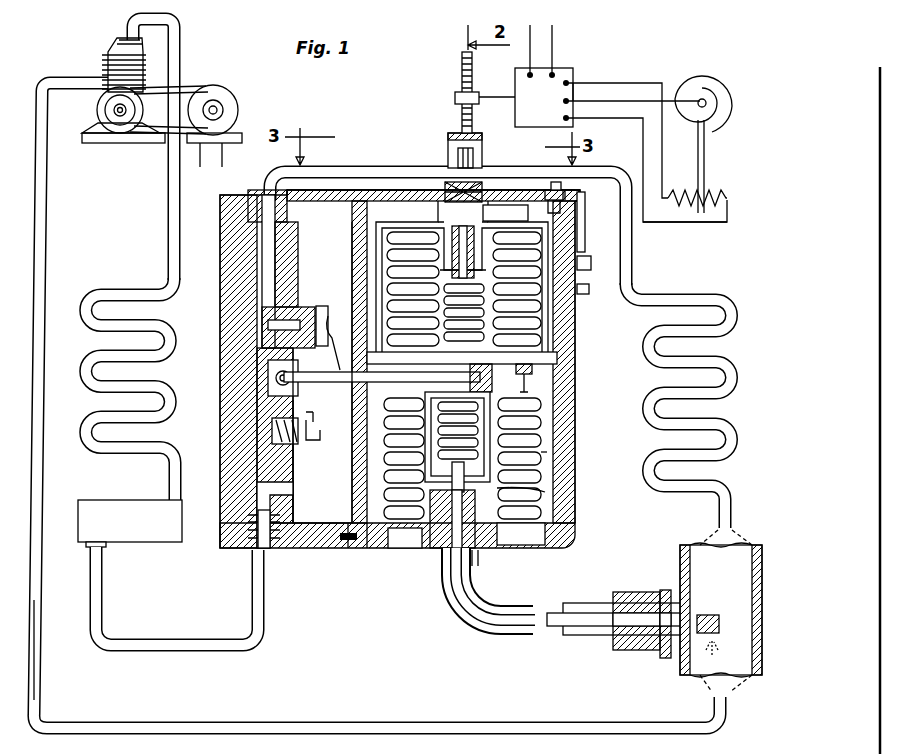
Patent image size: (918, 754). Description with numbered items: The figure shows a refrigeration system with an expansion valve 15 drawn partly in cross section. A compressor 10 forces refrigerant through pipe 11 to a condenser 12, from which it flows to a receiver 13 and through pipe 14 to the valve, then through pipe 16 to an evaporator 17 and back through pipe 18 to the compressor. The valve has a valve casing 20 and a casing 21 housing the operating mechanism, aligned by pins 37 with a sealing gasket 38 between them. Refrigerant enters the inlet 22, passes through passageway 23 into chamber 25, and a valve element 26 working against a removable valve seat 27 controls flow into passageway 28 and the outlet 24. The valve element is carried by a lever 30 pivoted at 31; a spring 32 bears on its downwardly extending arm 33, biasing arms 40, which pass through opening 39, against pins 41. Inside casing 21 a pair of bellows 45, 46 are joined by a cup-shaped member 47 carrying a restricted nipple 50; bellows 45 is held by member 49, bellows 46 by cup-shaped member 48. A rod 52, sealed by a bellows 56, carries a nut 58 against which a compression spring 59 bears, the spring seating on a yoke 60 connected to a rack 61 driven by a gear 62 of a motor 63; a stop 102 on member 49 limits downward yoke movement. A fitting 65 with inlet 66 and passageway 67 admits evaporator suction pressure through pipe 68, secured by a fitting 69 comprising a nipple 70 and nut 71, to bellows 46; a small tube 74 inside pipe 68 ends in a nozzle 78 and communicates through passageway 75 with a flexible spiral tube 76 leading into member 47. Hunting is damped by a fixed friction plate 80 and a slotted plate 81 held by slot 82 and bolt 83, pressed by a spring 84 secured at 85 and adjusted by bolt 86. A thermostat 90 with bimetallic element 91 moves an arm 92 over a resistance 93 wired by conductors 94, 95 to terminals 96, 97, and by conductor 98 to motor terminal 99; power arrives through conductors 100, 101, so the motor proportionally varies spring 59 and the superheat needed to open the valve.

The compressor 10 is at (104, 48).
The pipe 11 is at (168, 218).
The condenser 12 is at (86, 349).
The receiver 13 is at (138, 531).
The pipe 14 is at (186, 639).
The expansion valve 15 is at (371, 616).
The pipe 16 is at (374, 174).
The evaporator 17 is at (722, 438).
The pipe 18 is at (330, 727).
The valve casing 20 is at (298, 552).
The chamber (casing) 21 is at (580, 523).
The inlet 22 is at (252, 556).
The passageway 23 is at (309, 487).
The outlet 24 is at (256, 187).
The chamber 25 is at (326, 481).
The valve element 26 is at (322, 306).
The removable valve seat 27 is at (310, 307).
The passageway 28 is at (268, 246).
The lever 30 is at (340, 390).
The pivot 31 is at (276, 378).
The spring 32 is at (272, 430).
The downwardly extending arm 33 is at (328, 442).
The pins 37 is at (343, 547).
The sealing gasket 38 is at (352, 551).
The opening 39 is at (395, 458).
The arms 40 is at (387, 353).
The pins 41 is at (462, 372).
The bellows 45 is at (522, 289).
The bellows 46 is at (520, 439).
The cup-shaped member 47 is at (526, 383).
The cup-shaped member 48 is at (398, 553).
The member 49 is at (398, 200).
The nipple 50 is at (533, 363).
The rod 52 is at (516, 469).
The bellows 56 is at (440, 317).
The nut 58 is at (476, 192).
The compression spring 59 is at (492, 193).
The yoke 60 is at (448, 164).
The rack 61 is at (460, 129).
The gear 62 is at (455, 98).
The motor 63 is at (515, 87).
The fitting 65 is at (436, 576).
The inlet 66 is at (474, 577).
The passageway 67 is at (523, 517).
The pipe 68 is at (494, 637).
The fitting 69 is at (623, 623).
The nipple 70 is at (666, 657).
The nut 71 is at (630, 651).
The small tube 74 is at (458, 623).
The passageway 75 is at (424, 541).
The small tube 76 is at (398, 491).
The nozzle 78 is at (734, 602).
The friction plate 80 is at (392, 190).
The plate 81 is at (540, 190).
The slot 82 is at (582, 194).
The bolt 83 is at (555, 188).
The spring 84 is at (588, 222).
The securing point 85 is at (582, 292).
The bolt 86 is at (589, 264).
The thermostat 90 is at (699, 148).
The bimetallic element 91 is at (702, 79).
The arm 92 is at (706, 170).
The resistance 93 is at (702, 187).
The conductor 94 is at (690, 225).
The conductor 95 is at (672, 162).
The terminal 96 is at (630, 165).
The terminal 97 is at (568, 86).
The conductor 98 is at (630, 103).
The motor terminal 99 is at (617, 98).
The conductor 100 is at (528, 56).
The conductor 101 is at (556, 49).
The stop 102 is at (494, 211).